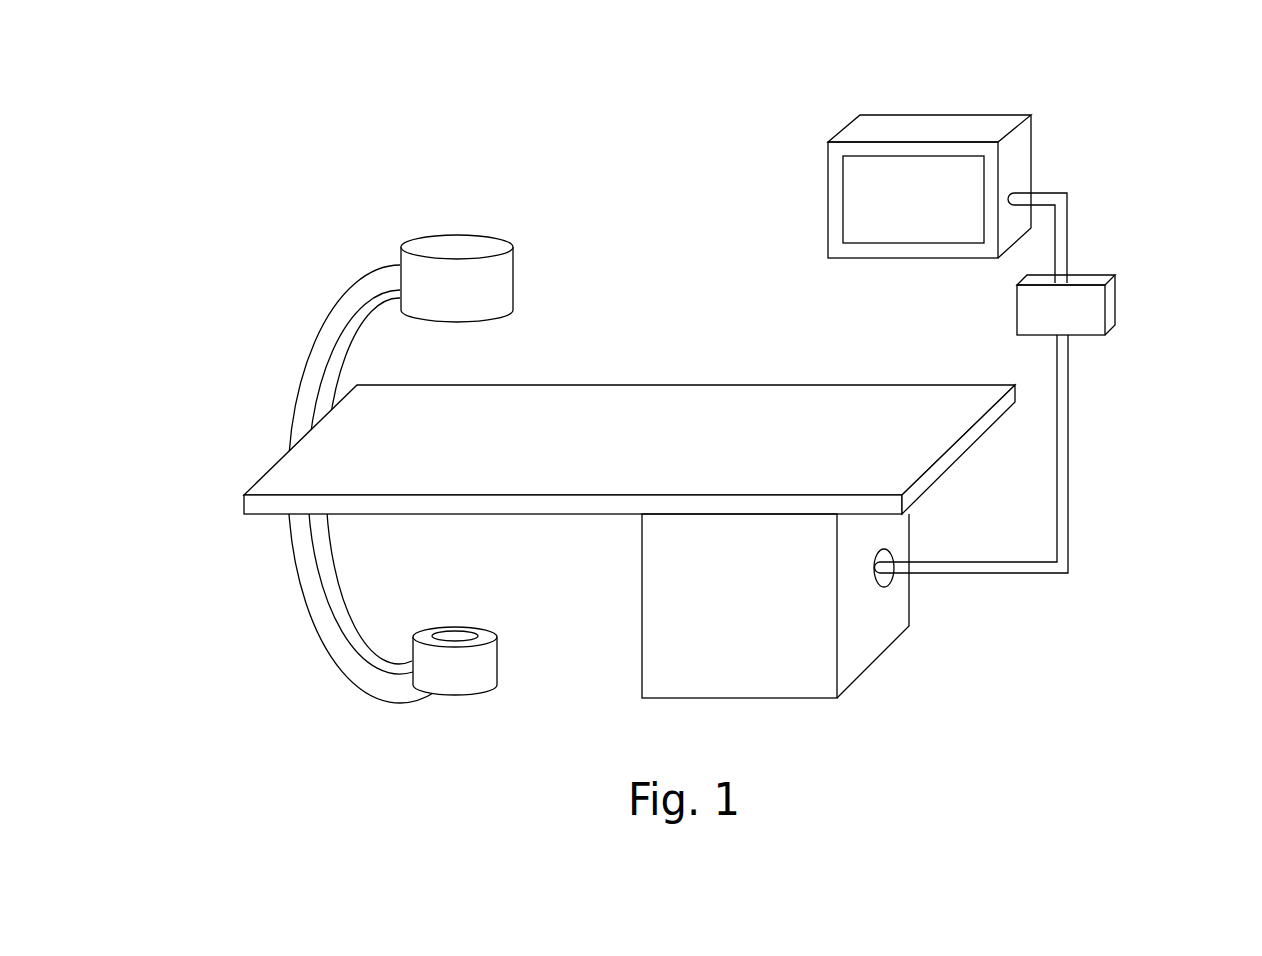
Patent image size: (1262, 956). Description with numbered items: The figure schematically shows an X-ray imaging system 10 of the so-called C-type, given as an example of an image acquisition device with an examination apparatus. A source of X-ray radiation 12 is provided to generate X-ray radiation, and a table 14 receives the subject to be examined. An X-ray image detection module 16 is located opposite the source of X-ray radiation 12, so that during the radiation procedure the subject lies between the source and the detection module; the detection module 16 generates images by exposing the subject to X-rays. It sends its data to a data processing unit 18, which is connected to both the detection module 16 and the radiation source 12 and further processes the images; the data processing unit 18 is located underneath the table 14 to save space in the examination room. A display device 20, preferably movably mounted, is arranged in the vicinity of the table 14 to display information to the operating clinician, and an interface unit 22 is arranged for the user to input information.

The X-ray imaging system 10 is at (303, 290).
The source of X-ray radiation 12 is at (482, 660).
The table 14 is at (631, 402).
The X-ray image detection module 16 is at (457, 245).
The data processing unit 18 is at (863, 628).
The display device 20 is at (912, 170).
The interface unit 22 is at (1083, 309).